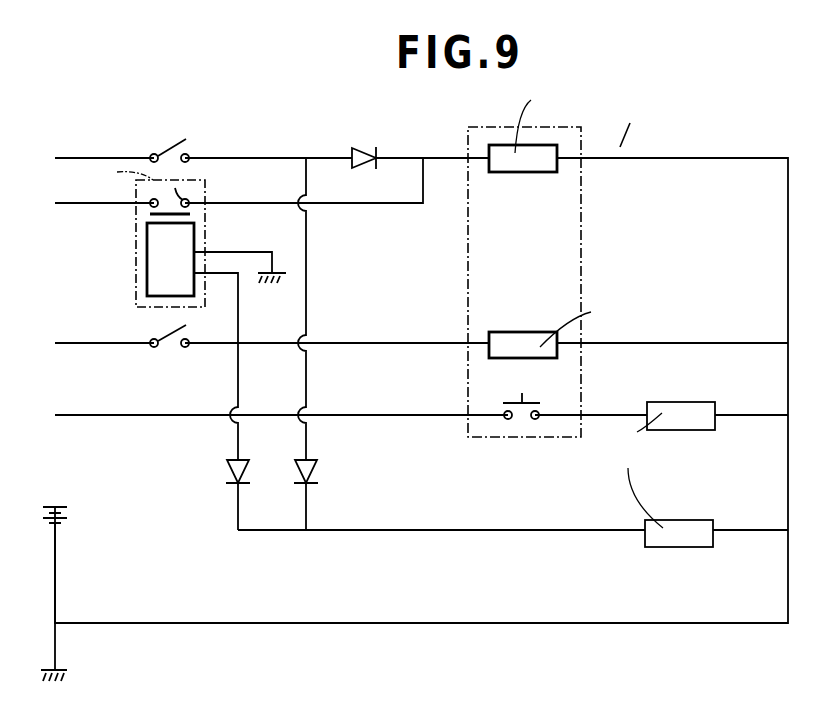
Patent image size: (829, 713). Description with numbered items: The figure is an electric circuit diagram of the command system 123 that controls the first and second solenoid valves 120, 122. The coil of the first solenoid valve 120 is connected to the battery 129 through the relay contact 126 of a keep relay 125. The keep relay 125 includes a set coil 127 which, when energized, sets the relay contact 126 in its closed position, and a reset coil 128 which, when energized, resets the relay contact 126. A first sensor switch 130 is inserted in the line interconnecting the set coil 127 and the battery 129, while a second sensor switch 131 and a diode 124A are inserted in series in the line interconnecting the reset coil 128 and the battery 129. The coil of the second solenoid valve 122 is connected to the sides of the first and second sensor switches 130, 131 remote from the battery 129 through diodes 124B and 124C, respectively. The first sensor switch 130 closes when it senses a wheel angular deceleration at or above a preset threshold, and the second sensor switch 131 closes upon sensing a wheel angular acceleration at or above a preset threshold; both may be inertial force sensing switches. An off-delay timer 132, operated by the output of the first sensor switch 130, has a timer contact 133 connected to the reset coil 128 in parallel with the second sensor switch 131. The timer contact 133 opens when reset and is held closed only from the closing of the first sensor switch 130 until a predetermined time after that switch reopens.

The first solenoid valve 120 is at (678, 402).
The second solenoid valve 122 is at (678, 520).
The command system 123 is at (617, 154).
The diode 124A is at (361, 139).
The diode 124B is at (227, 470).
The diode 124C is at (318, 476).
The keep relay 125 is at (581, 218).
The relay contact 126 is at (521, 394).
The set coil 127 is at (520, 331).
The reset coil 128 is at (523, 173).
The battery 129 is at (70, 512).
The first sensor switch 130 is at (172, 334).
The second sensor switch 131 is at (173, 143).
The off-delay timer 132 is at (136, 250).
The timer contact 133 is at (182, 198).